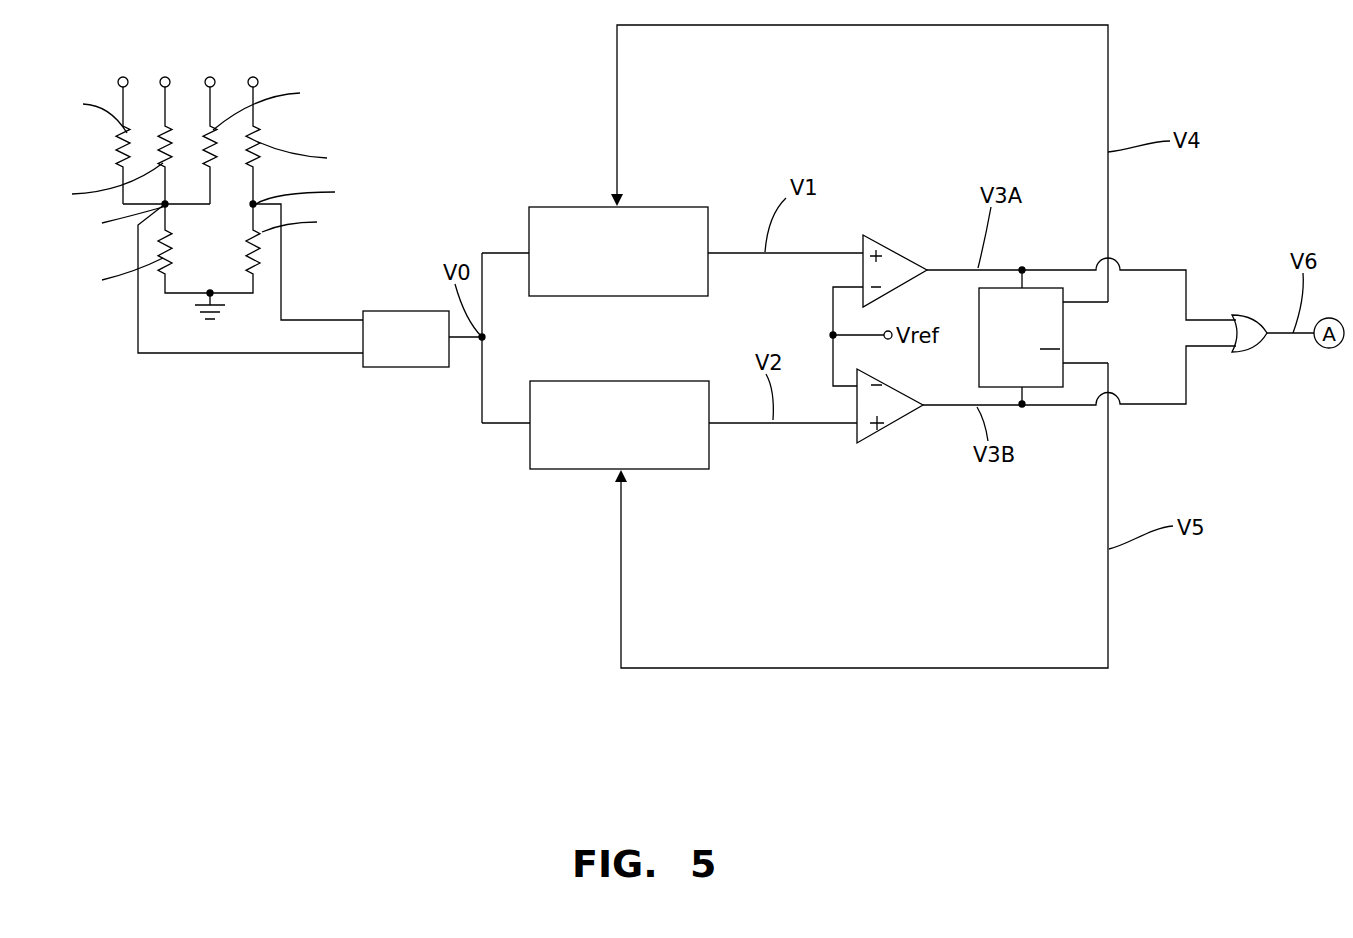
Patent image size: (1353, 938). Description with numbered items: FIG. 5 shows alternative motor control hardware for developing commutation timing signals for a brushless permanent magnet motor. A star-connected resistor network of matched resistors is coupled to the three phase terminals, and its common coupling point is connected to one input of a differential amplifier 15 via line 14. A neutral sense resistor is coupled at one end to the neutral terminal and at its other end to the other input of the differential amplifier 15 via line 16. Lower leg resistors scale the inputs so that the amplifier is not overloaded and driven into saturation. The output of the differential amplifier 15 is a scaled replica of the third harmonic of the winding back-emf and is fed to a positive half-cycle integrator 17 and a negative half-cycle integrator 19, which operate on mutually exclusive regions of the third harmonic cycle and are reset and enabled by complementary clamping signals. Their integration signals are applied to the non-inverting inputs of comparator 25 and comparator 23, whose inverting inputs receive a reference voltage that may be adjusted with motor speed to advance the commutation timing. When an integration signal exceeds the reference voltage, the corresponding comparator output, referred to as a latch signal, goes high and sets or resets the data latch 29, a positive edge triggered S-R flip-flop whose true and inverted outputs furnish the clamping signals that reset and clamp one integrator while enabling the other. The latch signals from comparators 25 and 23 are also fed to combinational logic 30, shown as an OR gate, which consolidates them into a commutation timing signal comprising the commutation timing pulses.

The line 14 is at (232, 353).
The differential amplifier 15 is at (400, 310).
The line 16 is at (281, 268).
The positive half-cycle integrator 17 is at (692, 204).
The negative half-cycle integrator 19 is at (558, 472).
The comparator 23 is at (892, 410).
The comparator 25 is at (902, 263).
The data latch 29 is at (1050, 288).
The combinational logic 30 is at (1242, 313).